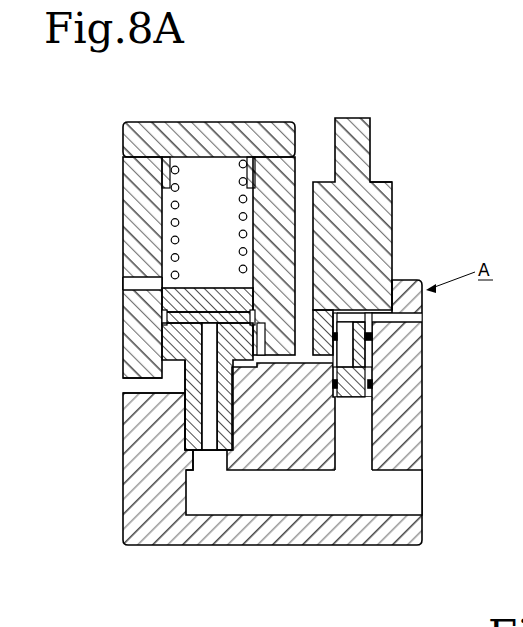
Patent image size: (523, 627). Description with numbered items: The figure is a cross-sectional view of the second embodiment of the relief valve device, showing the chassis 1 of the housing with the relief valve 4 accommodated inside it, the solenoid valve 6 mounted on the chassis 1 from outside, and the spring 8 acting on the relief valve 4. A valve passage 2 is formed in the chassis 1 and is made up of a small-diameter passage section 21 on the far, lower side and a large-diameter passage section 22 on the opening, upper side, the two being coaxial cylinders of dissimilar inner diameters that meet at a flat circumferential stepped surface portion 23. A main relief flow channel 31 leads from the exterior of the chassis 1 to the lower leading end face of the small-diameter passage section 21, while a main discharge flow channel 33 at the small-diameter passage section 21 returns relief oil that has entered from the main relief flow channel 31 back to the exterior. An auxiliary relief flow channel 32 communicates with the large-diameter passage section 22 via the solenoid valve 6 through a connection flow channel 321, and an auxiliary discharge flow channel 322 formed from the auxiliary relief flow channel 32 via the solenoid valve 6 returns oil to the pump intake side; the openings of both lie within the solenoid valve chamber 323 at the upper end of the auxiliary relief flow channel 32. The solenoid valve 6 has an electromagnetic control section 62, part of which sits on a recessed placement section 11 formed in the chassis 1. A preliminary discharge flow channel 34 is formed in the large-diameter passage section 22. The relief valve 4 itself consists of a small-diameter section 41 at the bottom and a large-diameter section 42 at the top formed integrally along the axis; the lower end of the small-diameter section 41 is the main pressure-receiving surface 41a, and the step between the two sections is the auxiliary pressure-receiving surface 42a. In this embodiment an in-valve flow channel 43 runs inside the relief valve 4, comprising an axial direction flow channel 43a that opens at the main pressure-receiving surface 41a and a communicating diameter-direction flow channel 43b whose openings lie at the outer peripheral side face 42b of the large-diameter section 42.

The chassis 1 is at (422, 420).
The valve passage 2 is at (213, 209).
The relief valve 4 is at (215, 289).
The solenoid valve 6 is at (392, 214).
The spring 8 is at (178, 168).
The recessed placement section 11 is at (389, 290).
The small-diameter passage section 21 is at (188, 418).
The large-diameter passage section 22 is at (172, 224).
The stepped surface portion 23 is at (185, 360).
The main relief flow channel 31 is at (325, 503).
The auxiliary relief flow channel 32 is at (357, 430).
The main discharge flow channel 33 is at (135, 384).
The preliminary discharge flow channel 34 is at (130, 288).
The small-diameter section 41 is at (195, 452).
The main pressure-receiving surface 41a is at (192, 472).
The large-diameter section 42 is at (164, 321).
The auxiliary pressure-receiving surface 42a is at (243, 367).
The outer peripheral side face 42b is at (160, 297).
The in-valve flow channel 43 is at (199, 311).
The axial direction flow channel 43a is at (207, 342).
The diameter-direction flow channel 43b is at (190, 316).
The electromagnetic control section 62 is at (393, 198).
The connection flow channel 321 is at (301, 342).
The auxiliary discharge flow channel 322 is at (401, 325).
The solenoid valve chamber 323 is at (350, 392).